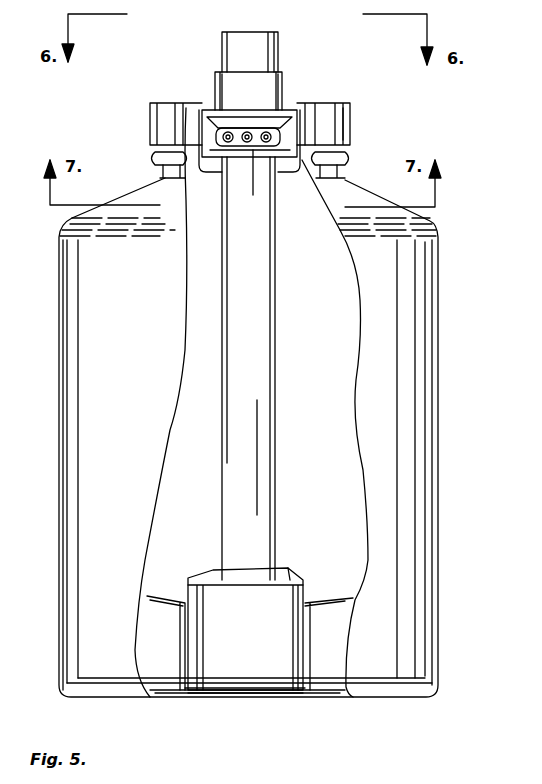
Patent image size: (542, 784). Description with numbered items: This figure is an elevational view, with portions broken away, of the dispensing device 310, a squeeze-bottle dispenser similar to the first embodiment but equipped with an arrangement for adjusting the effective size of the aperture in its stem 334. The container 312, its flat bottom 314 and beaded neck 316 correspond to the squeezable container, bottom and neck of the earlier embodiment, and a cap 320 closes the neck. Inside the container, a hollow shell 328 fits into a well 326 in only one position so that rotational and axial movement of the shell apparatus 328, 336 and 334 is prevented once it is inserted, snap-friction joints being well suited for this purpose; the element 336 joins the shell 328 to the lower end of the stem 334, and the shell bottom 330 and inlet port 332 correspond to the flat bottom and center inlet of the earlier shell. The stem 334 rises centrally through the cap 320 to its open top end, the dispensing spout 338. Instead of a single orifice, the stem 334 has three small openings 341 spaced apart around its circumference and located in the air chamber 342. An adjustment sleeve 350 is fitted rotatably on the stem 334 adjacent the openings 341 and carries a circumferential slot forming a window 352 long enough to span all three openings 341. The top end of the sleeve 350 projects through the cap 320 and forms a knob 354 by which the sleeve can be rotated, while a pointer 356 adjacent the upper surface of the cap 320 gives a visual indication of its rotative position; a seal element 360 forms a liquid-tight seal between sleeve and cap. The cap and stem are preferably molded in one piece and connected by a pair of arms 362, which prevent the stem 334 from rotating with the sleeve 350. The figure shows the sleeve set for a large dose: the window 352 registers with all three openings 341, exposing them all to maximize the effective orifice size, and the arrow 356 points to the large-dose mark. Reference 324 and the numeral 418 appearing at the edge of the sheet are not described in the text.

The dispensing device 310 is at (466, 212).
The side wall 312 is at (425, 302).
The bottom wall 314 is at (332, 697).
The neck 316 is at (165, 172).
The cap 320 is at (347, 132).
The left flange of bottom ring 324 is at (158, 597).
The well 326 is at (305, 628).
The shell 328 is at (205, 590).
The bottom plate 330 is at (283, 697).
The base 332 is at (245, 695).
The stem 334 is at (273, 392).
The shell apparatus component 336 is at (292, 576).
The outlet tube 338 is at (280, 30).
The small openings 341 is at (264, 130).
The air chamber 342 is at (312, 201).
The adjustment sleeve 350 is at (320, 168).
The window 352 is at (217, 402).
The knob 354 is at (216, 76).
The pointer 356 is at (283, 90).
The seal element 360 is at (210, 107).
The arms 362 is at (200, 126).
The stray numeral 418 is at (528, 537).